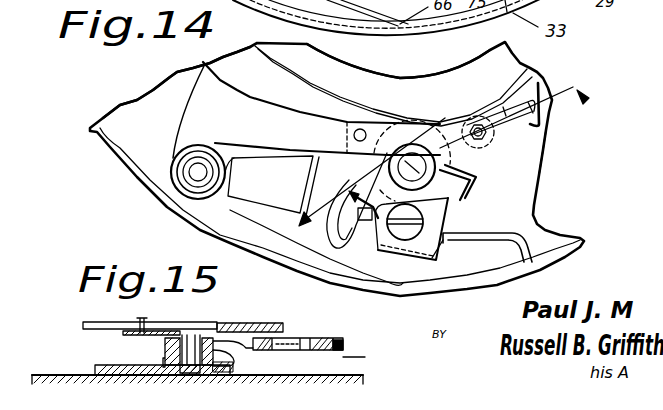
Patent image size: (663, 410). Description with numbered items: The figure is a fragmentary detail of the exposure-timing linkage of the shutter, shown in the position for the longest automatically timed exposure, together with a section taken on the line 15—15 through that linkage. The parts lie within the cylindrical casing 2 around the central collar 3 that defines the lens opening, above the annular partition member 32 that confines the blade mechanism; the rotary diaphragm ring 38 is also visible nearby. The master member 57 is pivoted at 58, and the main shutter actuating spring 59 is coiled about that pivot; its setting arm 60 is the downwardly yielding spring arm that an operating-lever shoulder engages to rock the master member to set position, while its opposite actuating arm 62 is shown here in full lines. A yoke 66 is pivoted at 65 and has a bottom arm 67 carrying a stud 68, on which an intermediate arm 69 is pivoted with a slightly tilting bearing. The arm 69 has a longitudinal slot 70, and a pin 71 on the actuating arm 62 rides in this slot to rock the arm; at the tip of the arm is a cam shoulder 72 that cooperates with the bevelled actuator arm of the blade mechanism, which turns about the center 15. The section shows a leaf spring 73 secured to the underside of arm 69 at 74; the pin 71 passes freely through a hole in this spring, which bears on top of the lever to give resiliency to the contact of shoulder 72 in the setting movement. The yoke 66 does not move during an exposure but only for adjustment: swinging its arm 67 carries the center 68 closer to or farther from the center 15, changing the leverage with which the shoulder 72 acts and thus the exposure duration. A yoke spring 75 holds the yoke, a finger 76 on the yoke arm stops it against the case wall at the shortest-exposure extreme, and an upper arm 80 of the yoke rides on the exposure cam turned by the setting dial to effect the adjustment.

In FIG. 14, the cylindrical casing 2 is at (132, 171).
In FIG. 14, the central forwardly projecting collar 3 is at (315, 92).
In FIG. 14, the stud 15 is at (583, 79).
In FIG. 14, the partition member 32 is at (118, 128).
In FIG. 15, the partition member 32 is at (48, 374).
In FIG. 14, the rotary diaphragm ring 38 is at (400, 86).
In FIG. 14, the master member 57 is at (273, 186).
In FIG. 14, the pivot of master member 58 is at (178, 165).
In FIG. 14, the main shutter actuating spring 59 is at (244, 163).
In FIG. 14, the setting arm 60 is at (185, 85).
In FIG. 14, the actuating arm 62 is at (392, 130).
In FIG. 15, the actuating arm 62 is at (169, 324).
In FIG. 14, the pivot of yoke 65 is at (449, 223).
In FIG. 14, the yoke 66 is at (432, 258).
In FIG. 14, the bottom arm 67 is at (350, 185).
In FIG. 15, the bottom arm 67 is at (112, 366).
In FIG. 14, the stud 68 is at (365, 167).
In FIG. 15, the stud 68 is at (166, 345).
In FIG. 14, the arm 69 is at (545, 130).
In FIG. 15, the arm 69 is at (333, 347).
In FIG. 14, the longitudinal slot 70 is at (503, 107).
In FIG. 15, the longitudinal slot 70 is at (312, 339).
In FIG. 14, the pin 71 is at (494, 147).
In FIG. 15, the pin 71 is at (262, 349).
In FIG. 14, the cam shoulder 72 is at (546, 85).
In FIG. 15, the cam shoulder 72 is at (368, 356).
In FIG. 14, the leaf spring 73 is at (543, 150).
In FIG. 15, the leaf spring 73 is at (290, 336).
In FIG. 14, the securing point of leaf spring 74 is at (354, 135).
In FIG. 15, the securing point of leaf spring 74 is at (139, 321).
In FIG. 14, the yoke spring 75 is at (484, 238).
In FIG. 14, the finger 76 is at (298, 242).
In FIG. 14, the upper arm 80 is at (470, 190).